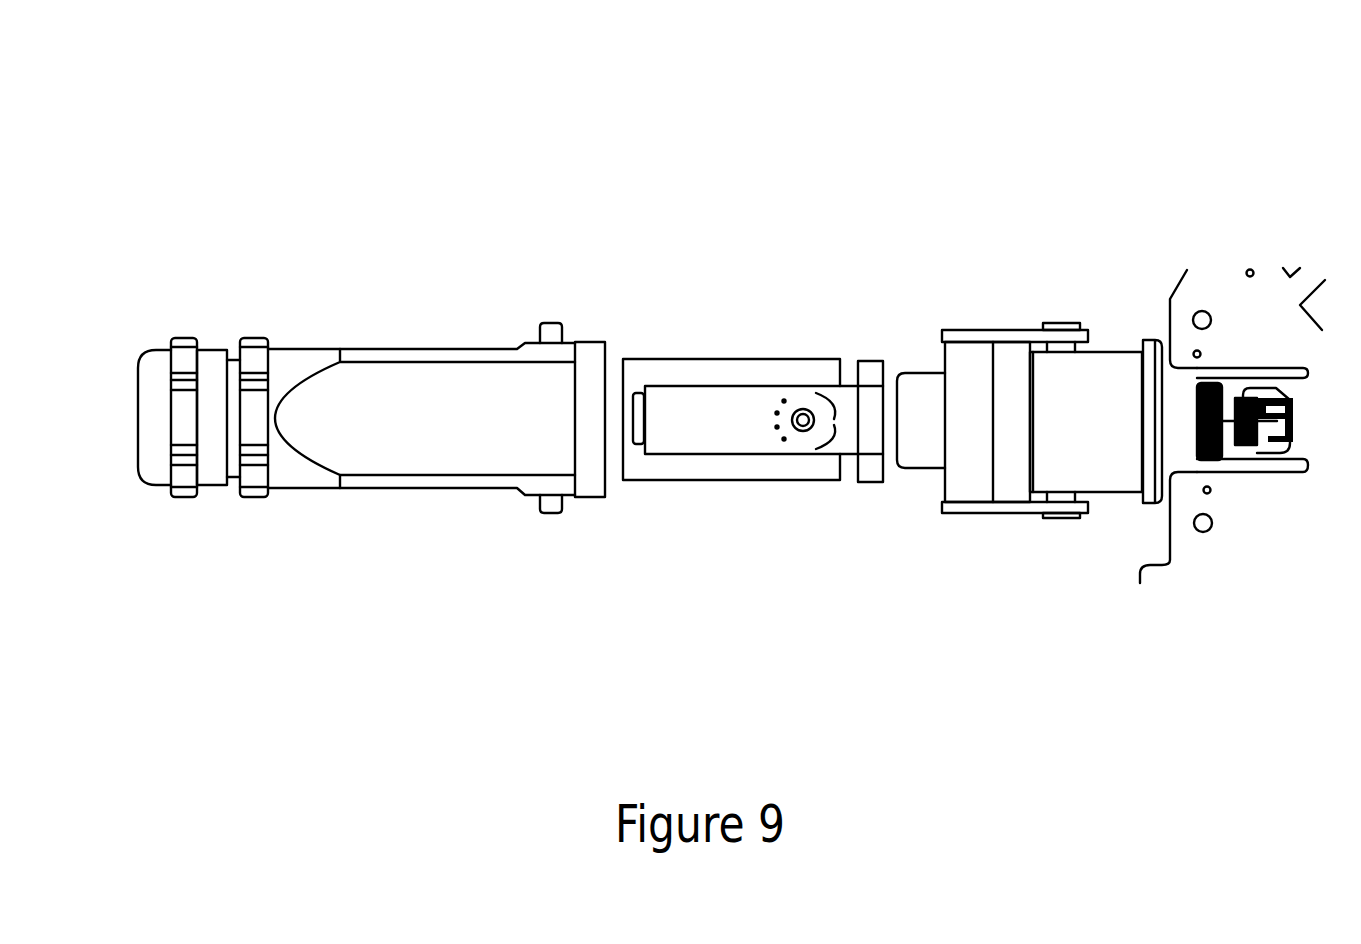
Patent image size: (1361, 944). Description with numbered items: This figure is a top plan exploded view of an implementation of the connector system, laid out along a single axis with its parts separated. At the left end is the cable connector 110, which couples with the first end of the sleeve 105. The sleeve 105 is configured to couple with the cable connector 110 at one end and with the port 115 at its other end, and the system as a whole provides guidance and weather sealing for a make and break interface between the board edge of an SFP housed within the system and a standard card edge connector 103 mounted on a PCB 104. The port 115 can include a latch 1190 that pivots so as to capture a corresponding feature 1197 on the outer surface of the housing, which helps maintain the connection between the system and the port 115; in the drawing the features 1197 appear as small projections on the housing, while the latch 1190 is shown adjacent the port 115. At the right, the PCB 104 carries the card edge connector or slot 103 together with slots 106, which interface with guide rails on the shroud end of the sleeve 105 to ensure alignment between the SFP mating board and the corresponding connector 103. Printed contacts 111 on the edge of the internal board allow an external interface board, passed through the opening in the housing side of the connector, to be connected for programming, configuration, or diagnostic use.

The cable connector 110 is at (380, 347).
The corresponding feature 1197 is at (543, 312).
The sleeve 105 is at (830, 350).
The latch 1190 is at (942, 360).
The port 115 is at (1112, 315).
The printed contacts 111 is at (1188, 407).
The slots 106 is at (1284, 368).
The card edge connector 103 is at (1197, 423).
The PCB 104 is at (1247, 580).